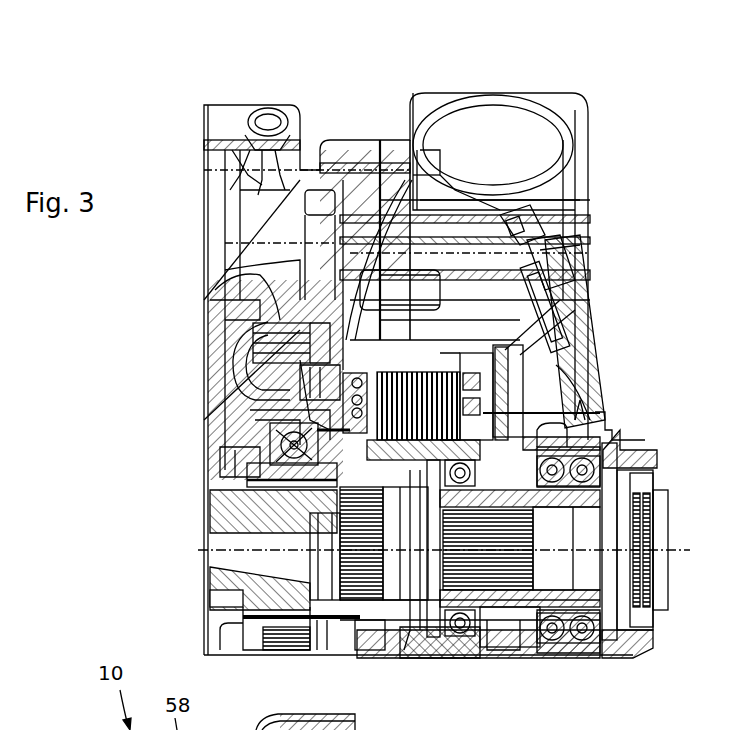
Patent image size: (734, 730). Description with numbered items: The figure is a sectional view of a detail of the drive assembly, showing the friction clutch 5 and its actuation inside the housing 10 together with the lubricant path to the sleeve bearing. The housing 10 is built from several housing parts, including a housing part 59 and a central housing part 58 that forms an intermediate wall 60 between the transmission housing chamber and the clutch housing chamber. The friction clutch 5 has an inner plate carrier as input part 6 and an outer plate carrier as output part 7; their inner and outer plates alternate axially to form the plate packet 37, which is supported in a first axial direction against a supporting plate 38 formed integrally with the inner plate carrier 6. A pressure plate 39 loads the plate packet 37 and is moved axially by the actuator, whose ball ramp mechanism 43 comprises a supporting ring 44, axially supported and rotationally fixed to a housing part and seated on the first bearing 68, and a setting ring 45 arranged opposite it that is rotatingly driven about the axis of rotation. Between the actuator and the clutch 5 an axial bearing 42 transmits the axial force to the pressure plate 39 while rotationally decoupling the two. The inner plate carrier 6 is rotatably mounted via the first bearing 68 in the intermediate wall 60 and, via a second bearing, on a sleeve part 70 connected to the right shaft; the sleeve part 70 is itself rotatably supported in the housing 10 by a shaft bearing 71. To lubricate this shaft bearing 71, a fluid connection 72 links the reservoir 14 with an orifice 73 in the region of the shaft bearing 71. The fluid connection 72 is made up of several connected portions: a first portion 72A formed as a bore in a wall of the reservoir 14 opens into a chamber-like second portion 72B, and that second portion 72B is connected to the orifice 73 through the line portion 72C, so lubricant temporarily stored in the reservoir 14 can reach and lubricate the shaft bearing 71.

The housing 10 is at (357, 140).
The reservoir 14 is at (270, 115).
The ball ramp mechanism 43 is at (322, 341).
The axial bearing 42 is at (312, 192).
The pressure plate 39 is at (412, 135).
The second portion 72B is at (465, 235).
The plate packet 37 is at (560, 200).
The fluid connection 72 is at (548, 226).
The outer plate carrier 7 is at (470, 360).
The friction clutch 5 is at (562, 302).
The line portion 72C is at (565, 370).
The housing part 59 is at (586, 388).
The supporting plate 38 is at (590, 416).
The orifice 73 is at (605, 437).
The first portion 72A is at (300, 267).
The supporting ring 44 is at (305, 377).
The central housing part 58 is at (330, 393).
The intermediate wall 60 is at (330, 410).
The setting ring 45 is at (280, 440).
The first bearing 68 is at (240, 505).
The inner plate carrier 6 is at (413, 660).
The sleeve part 70 is at (505, 650).
The shaft bearing 71 is at (563, 650).